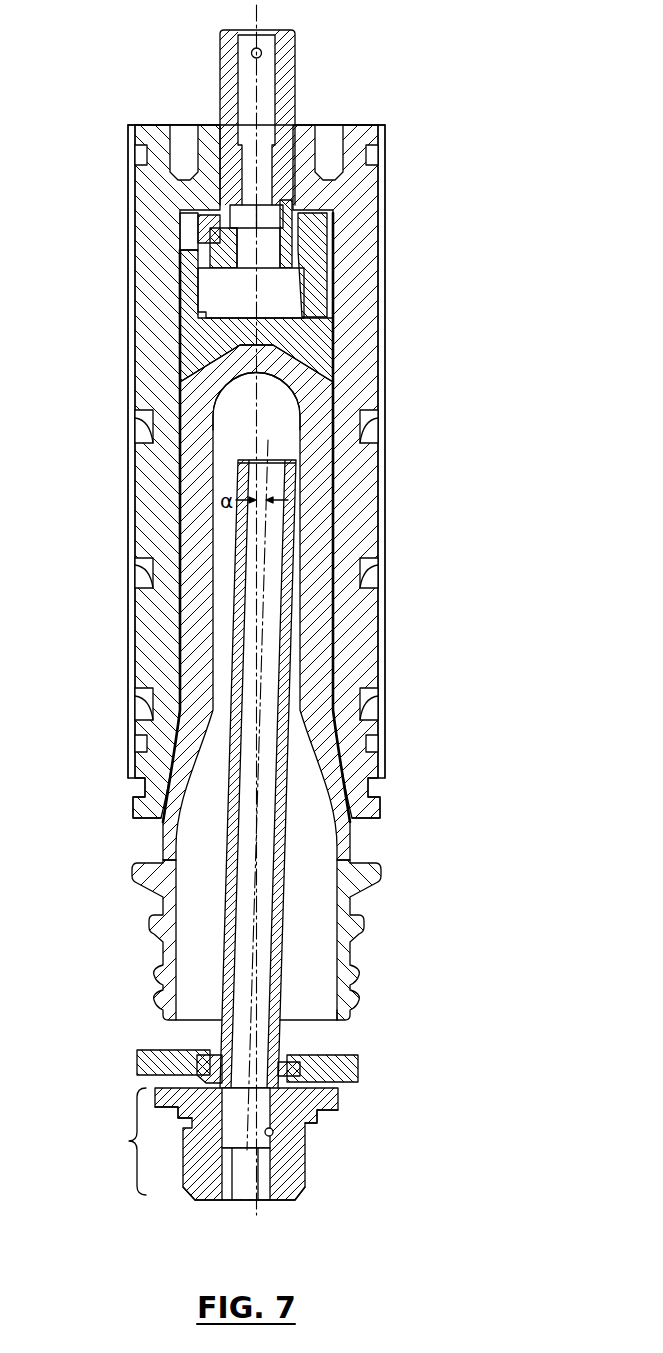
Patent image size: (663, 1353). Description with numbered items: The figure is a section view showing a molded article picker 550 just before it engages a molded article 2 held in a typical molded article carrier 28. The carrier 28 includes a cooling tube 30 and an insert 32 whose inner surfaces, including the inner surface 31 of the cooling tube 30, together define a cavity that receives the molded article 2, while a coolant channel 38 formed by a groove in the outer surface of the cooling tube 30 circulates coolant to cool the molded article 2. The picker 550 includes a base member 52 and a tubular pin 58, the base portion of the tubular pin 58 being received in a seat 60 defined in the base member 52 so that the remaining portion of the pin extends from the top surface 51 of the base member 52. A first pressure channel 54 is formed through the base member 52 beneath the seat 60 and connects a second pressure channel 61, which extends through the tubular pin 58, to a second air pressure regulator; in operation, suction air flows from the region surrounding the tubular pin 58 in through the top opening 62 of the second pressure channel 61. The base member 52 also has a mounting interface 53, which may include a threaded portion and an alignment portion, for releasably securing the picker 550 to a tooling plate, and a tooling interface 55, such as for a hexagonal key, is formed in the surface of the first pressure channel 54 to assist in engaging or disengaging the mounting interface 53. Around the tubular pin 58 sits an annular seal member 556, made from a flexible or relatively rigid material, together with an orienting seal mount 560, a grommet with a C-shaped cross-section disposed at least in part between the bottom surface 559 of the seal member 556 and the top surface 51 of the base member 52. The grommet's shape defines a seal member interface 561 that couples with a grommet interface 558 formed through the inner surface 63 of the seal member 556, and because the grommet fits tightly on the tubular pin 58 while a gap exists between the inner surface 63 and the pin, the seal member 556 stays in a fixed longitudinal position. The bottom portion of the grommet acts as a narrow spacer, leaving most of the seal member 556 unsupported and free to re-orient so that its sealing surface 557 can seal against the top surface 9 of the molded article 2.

The molded article carrier 28 is at (416, 134).
The cooling tube 30 is at (358, 330).
The insert 32 is at (332, 353).
The top opening 62 is at (244, 456).
The molded article 2 is at (318, 533).
The inner surface 31 is at (330, 614).
The coolant channel 38 is at (368, 703).
The second pressure channel 61 is at (268, 840).
The tubular pin 58 is at (280, 913).
The inner surface 63 is at (258, 1035).
The top surface 9 is at (340, 1020).
The top surface 51 is at (334, 1056).
The sealing surface 557 is at (340, 1050).
The seal member 556 is at (358, 1060).
The seal member interface 561 is at (186, 1054).
The orienting seal mount 560 is at (198, 1070).
The mounting interface 53 is at (120, 1141).
The grommet interface 558 is at (160, 1100).
The bottom surface 559 is at (326, 1095).
The base member 52 is at (317, 1117).
The seat 60 is at (271, 1136).
The first pressure channel 54 is at (243, 1187).
The tooling interface 55 is at (262, 1183).
The molded article picker 550 is at (363, 1187).